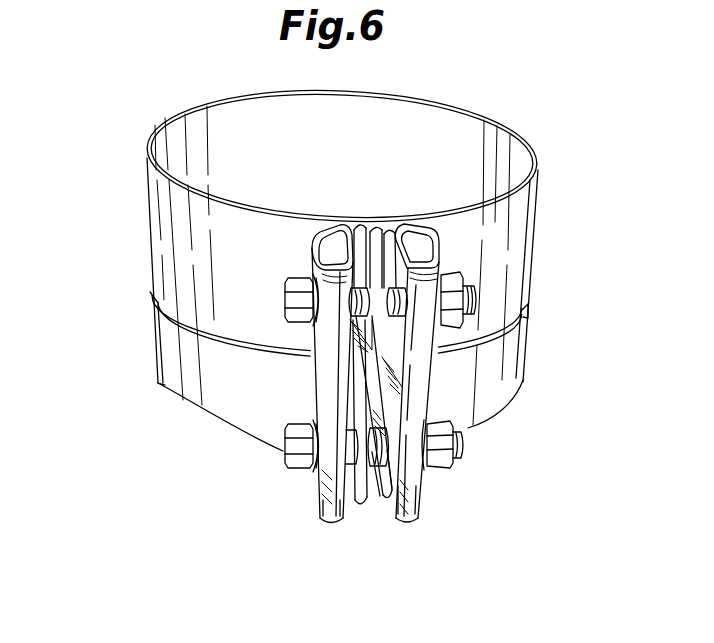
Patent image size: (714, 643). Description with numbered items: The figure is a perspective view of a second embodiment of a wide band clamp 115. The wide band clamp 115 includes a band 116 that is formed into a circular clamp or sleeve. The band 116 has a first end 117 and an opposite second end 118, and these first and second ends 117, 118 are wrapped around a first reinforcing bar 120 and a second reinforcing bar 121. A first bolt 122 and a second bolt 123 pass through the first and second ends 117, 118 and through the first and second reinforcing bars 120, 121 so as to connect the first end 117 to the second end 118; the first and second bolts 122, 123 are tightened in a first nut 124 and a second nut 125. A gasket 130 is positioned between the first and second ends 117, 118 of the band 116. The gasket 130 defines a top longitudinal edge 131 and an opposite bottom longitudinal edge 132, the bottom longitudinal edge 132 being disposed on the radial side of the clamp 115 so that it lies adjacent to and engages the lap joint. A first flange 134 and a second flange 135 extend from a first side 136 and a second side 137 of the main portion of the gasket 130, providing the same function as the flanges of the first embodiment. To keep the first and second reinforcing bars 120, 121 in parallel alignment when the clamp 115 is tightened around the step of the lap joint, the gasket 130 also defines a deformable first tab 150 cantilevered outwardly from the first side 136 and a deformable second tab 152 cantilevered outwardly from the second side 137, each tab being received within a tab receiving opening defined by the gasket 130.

The wide band clamp 115 is at (151, 119).
The band 116 is at (167, 218).
The first end 117 is at (337, 226).
The second end 118 is at (404, 236).
The first reinforcing bar 120 is at (328, 234).
The second reinforcing bar 121 is at (413, 236).
The first bolt 122 is at (462, 455).
The second bolt 123 is at (480, 294).
The first nut 124 is at (440, 422).
The second nut 125 is at (524, 318).
The gasket 130 is at (353, 512).
The top longitudinal edge 131 is at (386, 377).
The bottom longitudinal edge 132 is at (380, 236).
The first flange 134 is at (354, 236).
The second flange 135 is at (403, 232).
The first side 136 is at (333, 500).
The second side 137 is at (368, 490).
The first tab 150 is at (300, 336).
The second tab 152 is at (418, 487).